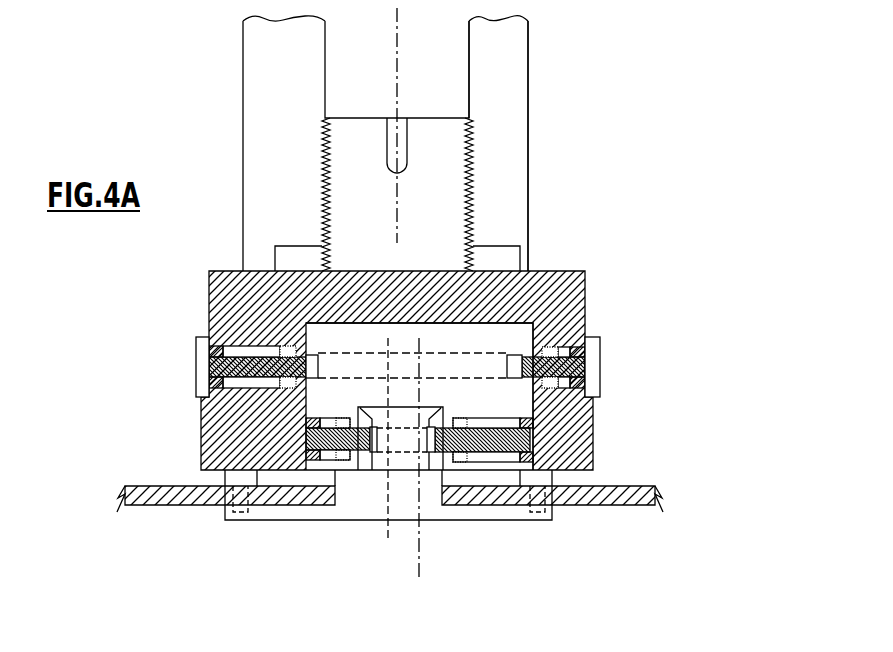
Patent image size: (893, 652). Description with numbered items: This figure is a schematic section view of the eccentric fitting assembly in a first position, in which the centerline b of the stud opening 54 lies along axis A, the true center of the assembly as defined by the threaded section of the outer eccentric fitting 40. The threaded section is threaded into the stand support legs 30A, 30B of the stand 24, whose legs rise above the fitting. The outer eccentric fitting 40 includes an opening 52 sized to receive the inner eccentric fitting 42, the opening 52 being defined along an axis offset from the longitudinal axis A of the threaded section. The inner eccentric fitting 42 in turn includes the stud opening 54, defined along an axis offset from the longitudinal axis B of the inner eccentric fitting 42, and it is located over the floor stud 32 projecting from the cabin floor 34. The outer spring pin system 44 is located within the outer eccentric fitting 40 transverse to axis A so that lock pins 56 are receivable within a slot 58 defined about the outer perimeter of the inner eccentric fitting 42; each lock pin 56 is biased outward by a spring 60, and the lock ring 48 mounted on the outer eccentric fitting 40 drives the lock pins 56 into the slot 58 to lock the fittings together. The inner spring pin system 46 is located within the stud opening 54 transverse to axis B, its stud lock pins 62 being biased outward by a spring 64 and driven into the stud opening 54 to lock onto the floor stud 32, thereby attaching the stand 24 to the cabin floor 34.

The stand 24 is at (548, 42).
The stand support leg 30A is at (515, 105).
The stand support leg 30B is at (498, 146).
The axis A is at (396, 222).
The outer eccentric fitting 40 is at (370, 309).
The inner eccentric fitting 42 is at (378, 347).
The opening 52 is at (523, 311).
The outer spring pin system 44 is at (231, 338).
The spring 60 is at (285, 345).
The slot 58 is at (320, 323).
The lock pin 56 is at (257, 378).
The lock ring 48 is at (187, 364).
The stud opening 54 is at (365, 407).
The inner spring pin system 46 is at (509, 421).
The spring 64 is at (473, 418).
The stud lock pin 62 is at (522, 440).
The cabin floor 34 is at (172, 486).
The floor stud 32 is at (371, 473).
The centerline of the stud opening b is at (388, 542).
The axis B is at (421, 542).